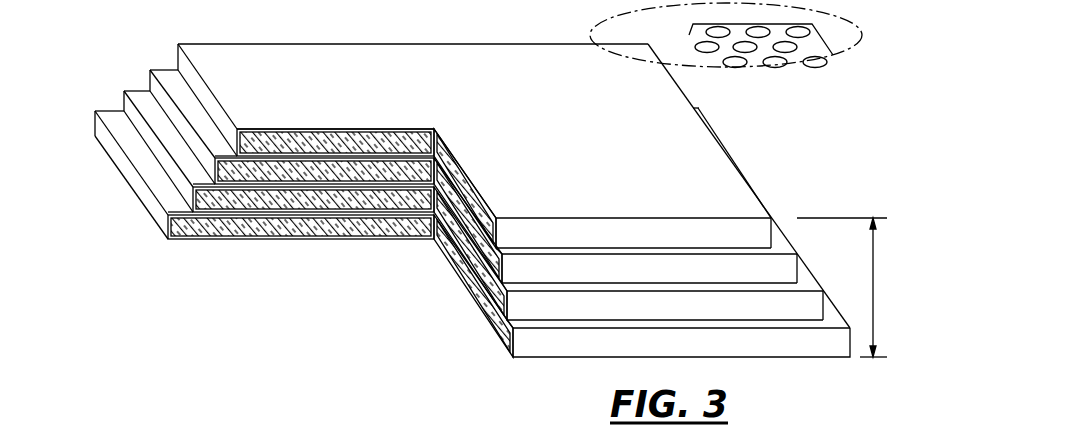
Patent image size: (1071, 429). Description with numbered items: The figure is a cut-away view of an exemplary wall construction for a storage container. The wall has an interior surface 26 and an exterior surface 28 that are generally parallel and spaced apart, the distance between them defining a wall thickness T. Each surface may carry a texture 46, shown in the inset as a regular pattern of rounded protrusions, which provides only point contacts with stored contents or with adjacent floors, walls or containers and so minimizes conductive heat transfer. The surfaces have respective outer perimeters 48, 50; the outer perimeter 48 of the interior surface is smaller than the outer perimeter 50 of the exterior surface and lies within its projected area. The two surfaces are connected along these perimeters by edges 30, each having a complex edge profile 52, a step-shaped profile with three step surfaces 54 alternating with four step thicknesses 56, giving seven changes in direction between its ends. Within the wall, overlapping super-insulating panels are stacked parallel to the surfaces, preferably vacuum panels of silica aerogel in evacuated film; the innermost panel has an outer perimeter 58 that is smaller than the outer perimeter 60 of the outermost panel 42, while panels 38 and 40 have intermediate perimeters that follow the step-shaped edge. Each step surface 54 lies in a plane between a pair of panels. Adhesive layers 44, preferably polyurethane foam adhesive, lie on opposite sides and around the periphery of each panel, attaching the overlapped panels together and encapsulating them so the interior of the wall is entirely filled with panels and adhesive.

The interior surface 26 is at (540, 80).
The exterior surface 28 is at (353, 241).
The edges 30 is at (773, 202).
The super-insulating panel 38 is at (310, 173).
The super-insulating panel 40 is at (367, 205).
The super-insulating panel 42 is at (408, 227).
The adhesive layers 44 is at (247, 155).
The texture 46 is at (824, 30).
The outer perimeter 48 is at (463, 43).
The outer perimeter 50 is at (760, 357).
The complex edge profile 52 is at (207, 165).
The step surfaces 54 is at (140, 92).
The step thicknesses 56 is at (130, 113).
The outer perimeter 58 is at (220, 130).
The outer perimeter 60 is at (148, 231).
The wall thickness T is at (846, 287).